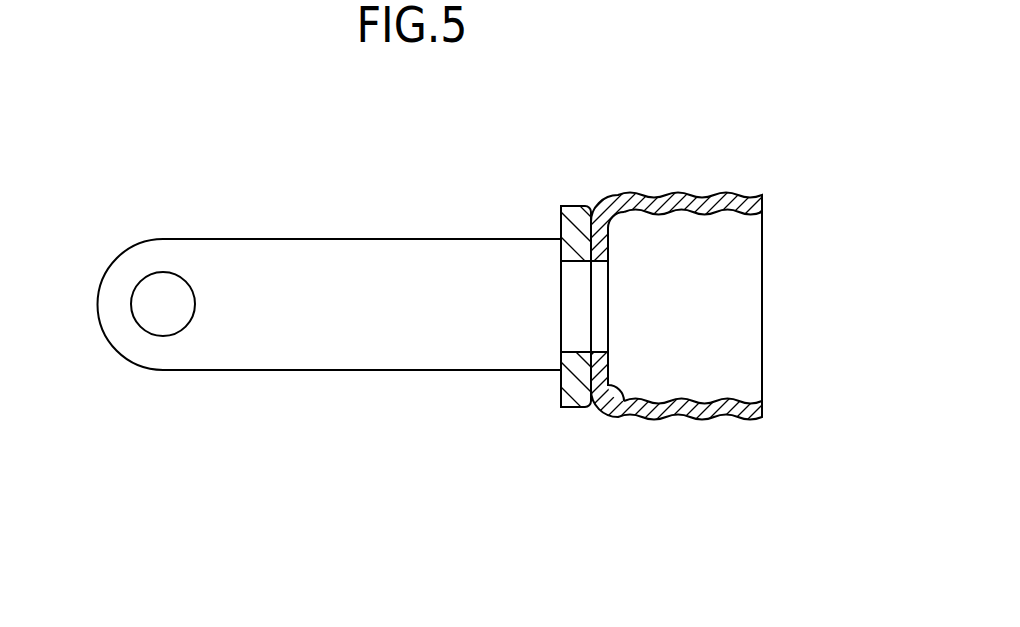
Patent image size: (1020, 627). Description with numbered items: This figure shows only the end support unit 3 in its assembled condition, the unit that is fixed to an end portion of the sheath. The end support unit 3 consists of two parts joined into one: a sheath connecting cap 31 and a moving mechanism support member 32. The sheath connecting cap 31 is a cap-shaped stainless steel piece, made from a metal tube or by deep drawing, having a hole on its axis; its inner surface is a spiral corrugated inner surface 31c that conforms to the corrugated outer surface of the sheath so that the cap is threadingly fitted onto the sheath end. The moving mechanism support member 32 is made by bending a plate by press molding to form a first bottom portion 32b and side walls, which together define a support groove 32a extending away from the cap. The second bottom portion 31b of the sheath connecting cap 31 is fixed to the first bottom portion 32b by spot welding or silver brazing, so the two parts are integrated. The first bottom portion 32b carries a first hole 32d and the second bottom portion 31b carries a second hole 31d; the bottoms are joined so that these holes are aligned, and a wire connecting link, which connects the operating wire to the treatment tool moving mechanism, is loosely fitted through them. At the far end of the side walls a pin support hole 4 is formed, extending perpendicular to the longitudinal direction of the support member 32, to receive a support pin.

The end support unit 3 is at (544, 338).
The pin support hole 4 is at (157, 337).
The sheath connecting cap 31 is at (680, 307).
The second bottom portion 31b is at (612, 232).
The corrugated inner surface 31c is at (697, 212).
The second hole 31d is at (603, 326).
The moving mechanism support member 32 is at (441, 315).
The support groove 32a is at (330, 346).
The first bottom portion 32b is at (572, 212).
The first hole 32d is at (567, 331).